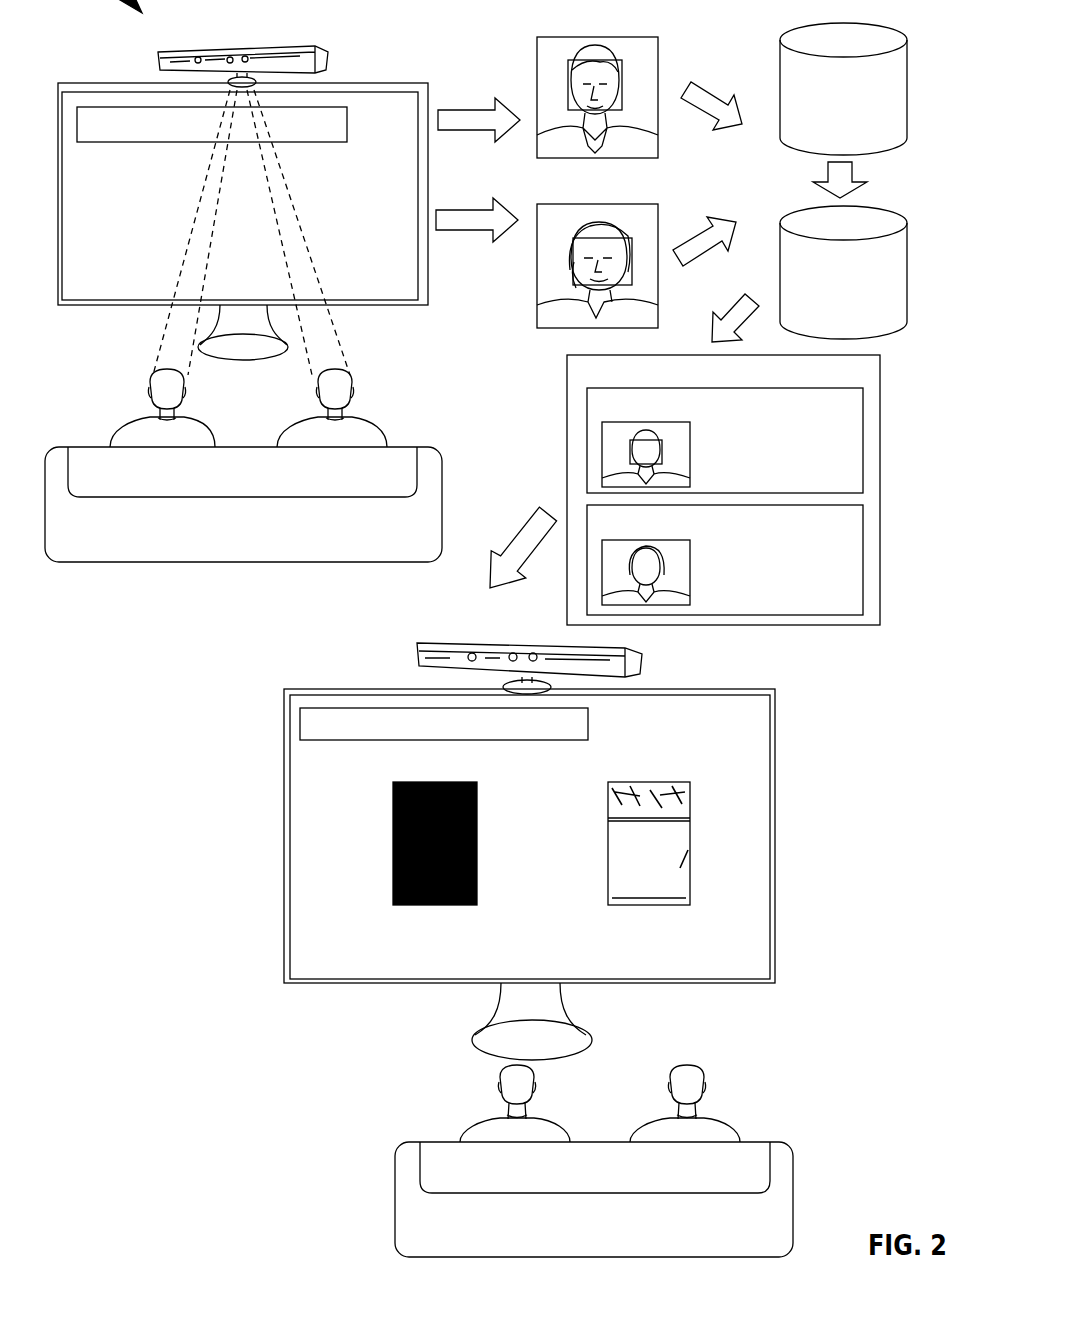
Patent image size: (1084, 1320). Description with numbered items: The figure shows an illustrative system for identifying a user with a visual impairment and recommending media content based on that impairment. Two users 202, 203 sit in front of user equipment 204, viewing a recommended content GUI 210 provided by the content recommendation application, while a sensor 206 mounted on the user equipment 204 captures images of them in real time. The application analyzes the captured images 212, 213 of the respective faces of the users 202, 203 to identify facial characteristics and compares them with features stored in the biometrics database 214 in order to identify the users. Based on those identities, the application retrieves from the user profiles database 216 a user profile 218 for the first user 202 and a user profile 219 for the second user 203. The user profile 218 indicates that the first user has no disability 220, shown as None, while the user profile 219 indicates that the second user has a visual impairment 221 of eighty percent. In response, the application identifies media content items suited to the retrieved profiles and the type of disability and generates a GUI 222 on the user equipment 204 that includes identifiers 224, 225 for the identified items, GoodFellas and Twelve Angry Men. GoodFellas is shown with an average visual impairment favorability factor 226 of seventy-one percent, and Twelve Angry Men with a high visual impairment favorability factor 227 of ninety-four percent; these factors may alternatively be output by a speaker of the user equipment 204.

The user 202 is at (150, 390).
The user 203 is at (352, 390).
The user equipment 204 is at (122, 83).
The sensor 206 is at (288, 48).
The recommended content GUI 210 is at (408, 193).
The image 212 is at (607, 37).
The image 213 is at (607, 204).
The biometrics database 214 is at (880, 28).
The user profiles database 216 is at (870, 215).
The user profile 218 is at (652, 388).
The user profile 219 is at (865, 525).
The disability 220 is at (845, 455).
The visual impairment 221 is at (845, 578).
The GUI 222 is at (327, 763).
The identifier 224 is at (393, 842).
The identifier 225 is at (608, 842).
The visual impairment favorability factor 226 is at (383, 970).
The visual impairment favorability factor 227 is at (670, 970).